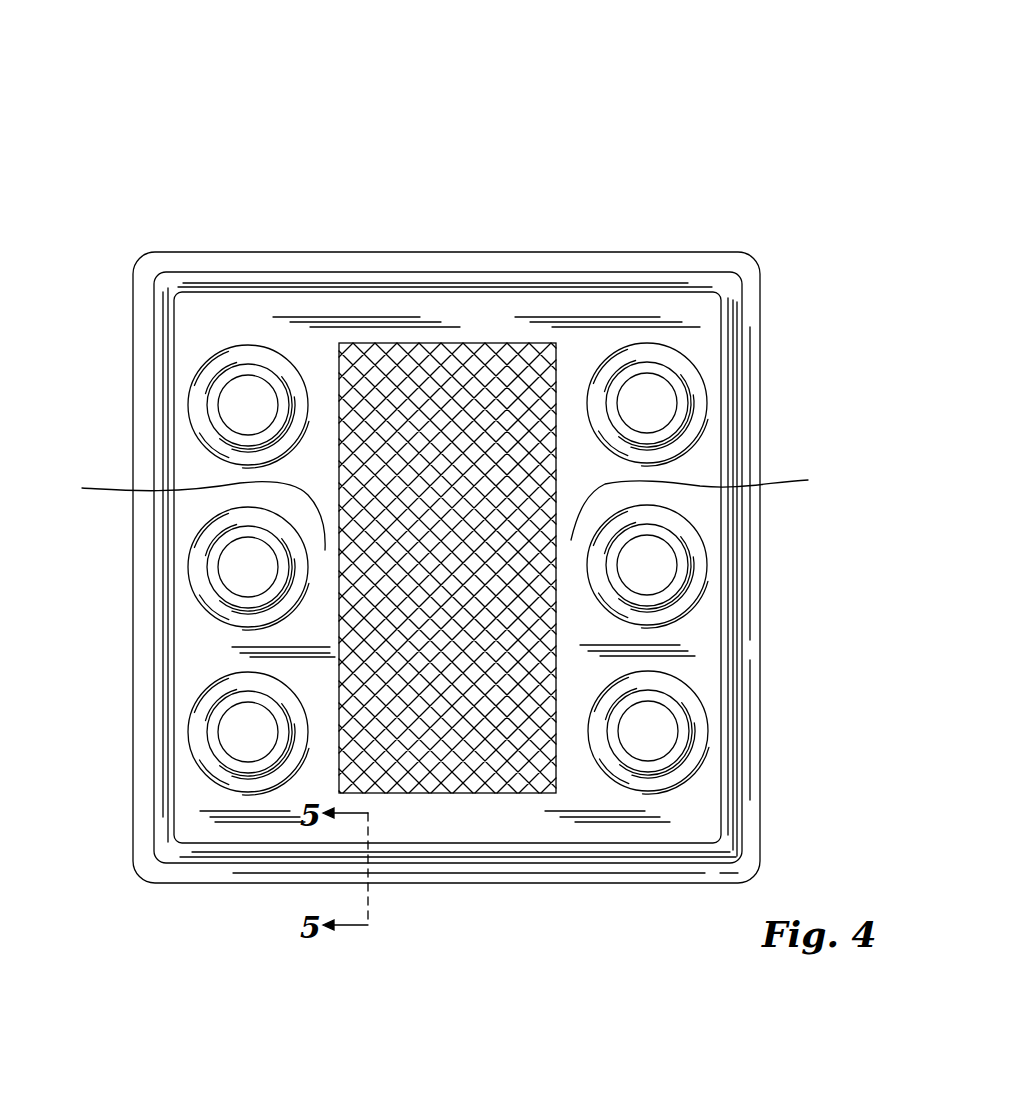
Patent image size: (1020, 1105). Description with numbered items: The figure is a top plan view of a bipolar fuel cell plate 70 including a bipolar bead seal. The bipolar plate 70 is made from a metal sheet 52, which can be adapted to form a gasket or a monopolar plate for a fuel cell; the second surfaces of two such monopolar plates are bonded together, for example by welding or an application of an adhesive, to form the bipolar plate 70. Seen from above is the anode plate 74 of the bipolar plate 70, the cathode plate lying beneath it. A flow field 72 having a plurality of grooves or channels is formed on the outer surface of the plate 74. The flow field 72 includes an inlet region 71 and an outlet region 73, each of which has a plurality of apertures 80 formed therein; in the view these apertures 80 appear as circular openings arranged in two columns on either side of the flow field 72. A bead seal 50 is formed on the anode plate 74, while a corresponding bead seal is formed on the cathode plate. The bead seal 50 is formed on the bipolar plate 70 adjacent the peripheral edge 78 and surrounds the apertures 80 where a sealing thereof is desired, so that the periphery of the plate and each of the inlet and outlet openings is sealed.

The bipolar fuel cell plate 70 is at (703, 137).
The metal sheet 52 is at (753, 280).
The peripheral edge 78 is at (677, 883).
The flow field 72 is at (460, 363).
The anode plate 74 is at (463, 826).
The bead seal 50 is at (170, 283).
The apertures 80 is at (252, 403).
The inlet region 71 is at (190, 511).
The outlet region 73 is at (708, 502).